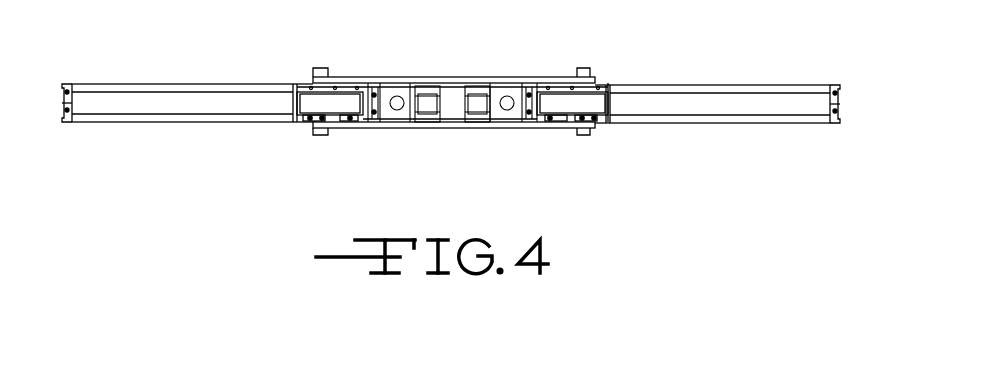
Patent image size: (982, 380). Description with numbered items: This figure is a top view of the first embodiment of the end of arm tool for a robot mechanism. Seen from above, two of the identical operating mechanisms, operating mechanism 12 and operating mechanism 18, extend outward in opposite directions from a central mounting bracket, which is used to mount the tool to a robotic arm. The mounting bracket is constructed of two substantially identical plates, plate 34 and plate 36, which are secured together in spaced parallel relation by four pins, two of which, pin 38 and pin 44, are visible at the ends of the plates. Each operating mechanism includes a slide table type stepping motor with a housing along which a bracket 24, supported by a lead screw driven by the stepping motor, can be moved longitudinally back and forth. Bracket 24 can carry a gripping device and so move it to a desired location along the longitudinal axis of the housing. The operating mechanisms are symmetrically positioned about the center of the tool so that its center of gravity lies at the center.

The operating mechanism 12 is at (677, 85).
The operating mechanism 18 is at (92, 84).
The bracket 24 is at (610, 117).
The plate 34 is at (452, 129).
The plate 36 is at (468, 77).
The pin 38 is at (579, 68).
The pin 44 is at (316, 68).